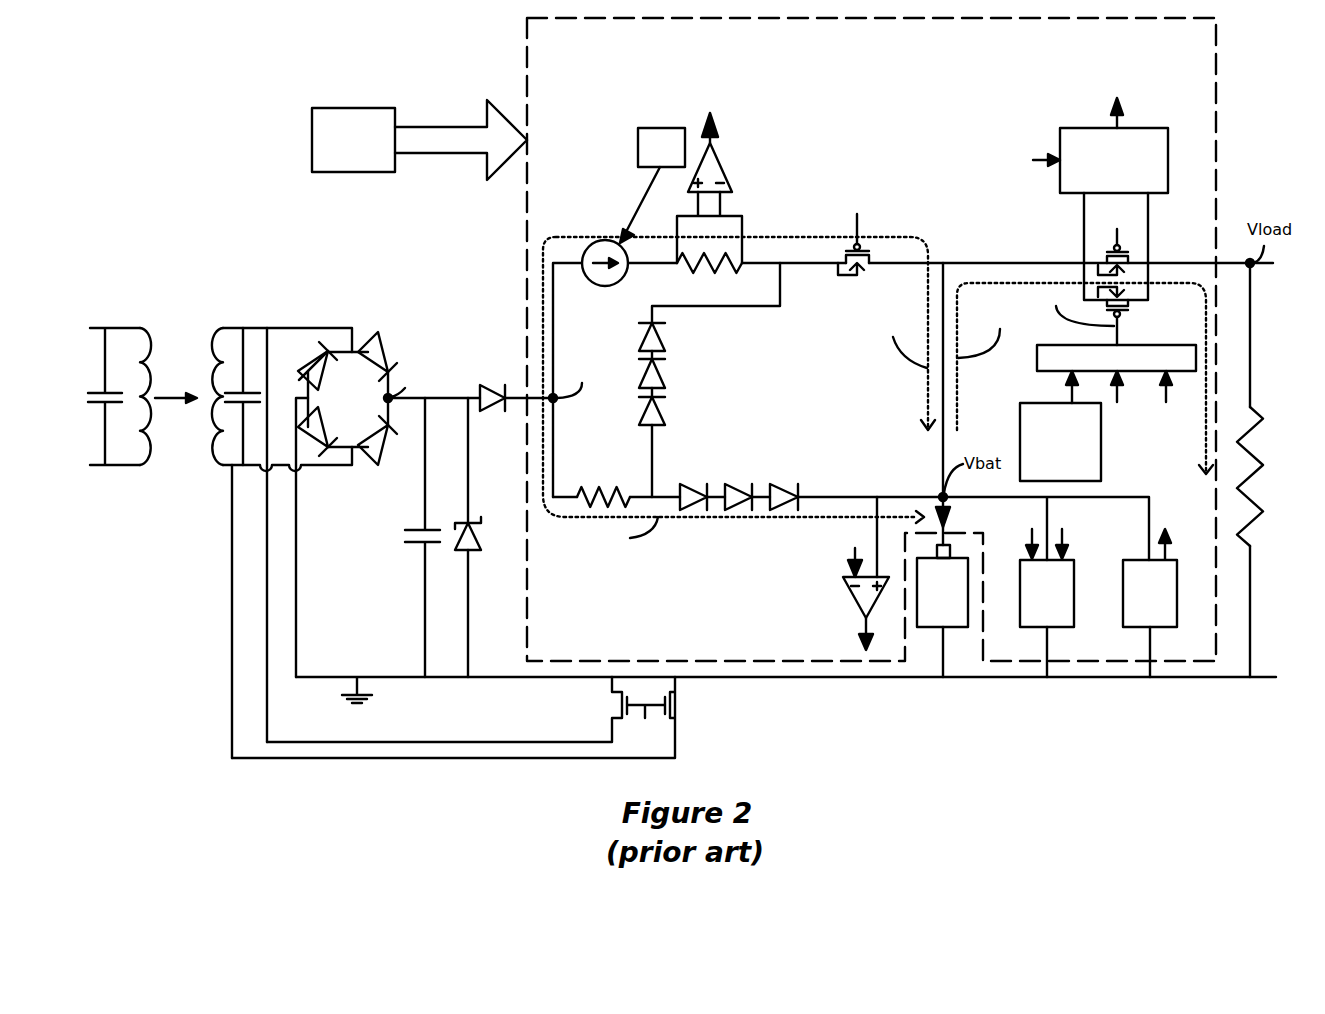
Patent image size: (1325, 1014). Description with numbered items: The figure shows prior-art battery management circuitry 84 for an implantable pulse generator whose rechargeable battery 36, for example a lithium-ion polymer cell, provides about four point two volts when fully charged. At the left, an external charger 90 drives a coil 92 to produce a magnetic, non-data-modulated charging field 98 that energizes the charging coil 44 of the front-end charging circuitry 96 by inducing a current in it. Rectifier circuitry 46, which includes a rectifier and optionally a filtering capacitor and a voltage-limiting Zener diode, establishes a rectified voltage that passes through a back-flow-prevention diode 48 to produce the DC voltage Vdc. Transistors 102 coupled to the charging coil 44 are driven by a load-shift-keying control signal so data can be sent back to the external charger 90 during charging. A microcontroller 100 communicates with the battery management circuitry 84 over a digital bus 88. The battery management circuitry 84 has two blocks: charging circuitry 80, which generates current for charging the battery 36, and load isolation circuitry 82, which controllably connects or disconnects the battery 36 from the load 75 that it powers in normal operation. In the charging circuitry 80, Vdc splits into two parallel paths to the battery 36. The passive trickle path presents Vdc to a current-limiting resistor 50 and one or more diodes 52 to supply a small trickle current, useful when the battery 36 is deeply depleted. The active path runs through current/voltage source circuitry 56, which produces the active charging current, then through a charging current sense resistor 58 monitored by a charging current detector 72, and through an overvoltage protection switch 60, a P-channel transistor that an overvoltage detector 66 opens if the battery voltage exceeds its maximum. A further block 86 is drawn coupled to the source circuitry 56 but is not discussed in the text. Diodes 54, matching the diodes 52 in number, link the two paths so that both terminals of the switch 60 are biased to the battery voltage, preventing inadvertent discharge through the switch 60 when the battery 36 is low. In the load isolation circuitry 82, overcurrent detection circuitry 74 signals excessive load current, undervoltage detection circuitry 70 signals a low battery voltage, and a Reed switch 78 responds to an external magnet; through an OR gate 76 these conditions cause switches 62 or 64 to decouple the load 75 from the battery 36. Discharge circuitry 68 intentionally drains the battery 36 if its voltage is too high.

The rechargeable battery 36 is at (951, 587).
The charging coil 44 is at (206, 450).
The rectifier circuitry 46 is at (347, 398).
The back-flow-prevention diode 48 is at (516, 385).
The current-limiting resistor 50 is at (603, 482).
The diodes 52 is at (739, 483).
The diodes 54 is at (669, 410).
The current/voltage source circuitry 56 is at (605, 274).
The charging current sense resistor 58 is at (709, 243).
The overvoltage protection switch 60 is at (853, 249).
The switch 62 is at (1130, 260).
The switch 64 is at (1130, 316).
The overvoltage detector 66 is at (863, 593).
The discharge circuitry 68 is at (1036, 613).
The undervoltage detection circuitry 70 is at (1165, 622).
The charging current detector 72 is at (717, 170).
The overcurrent detection circuitry 74 is at (1060, 140).
The load 75 is at (1276, 470).
The OR gate 76 is at (1116, 381).
The Reed switch 78 is at (1060, 442).
The charging circuitry 80 is at (932, 68).
The load isolation circuitry 82 is at (1202, 68).
The battery management circuitry 84 is at (527, 90).
The current control 86 is at (652, 185).
The digital bus 88 is at (461, 140).
The external charger 90 is at (90, 267).
The coil 92 is at (147, 348).
The front-end charging circuitry 96 is at (370, 493).
The magnetic charging field 98 is at (176, 385).
The microcontroller 100 is at (353, 140).
The transistors 102 is at (473, 717).